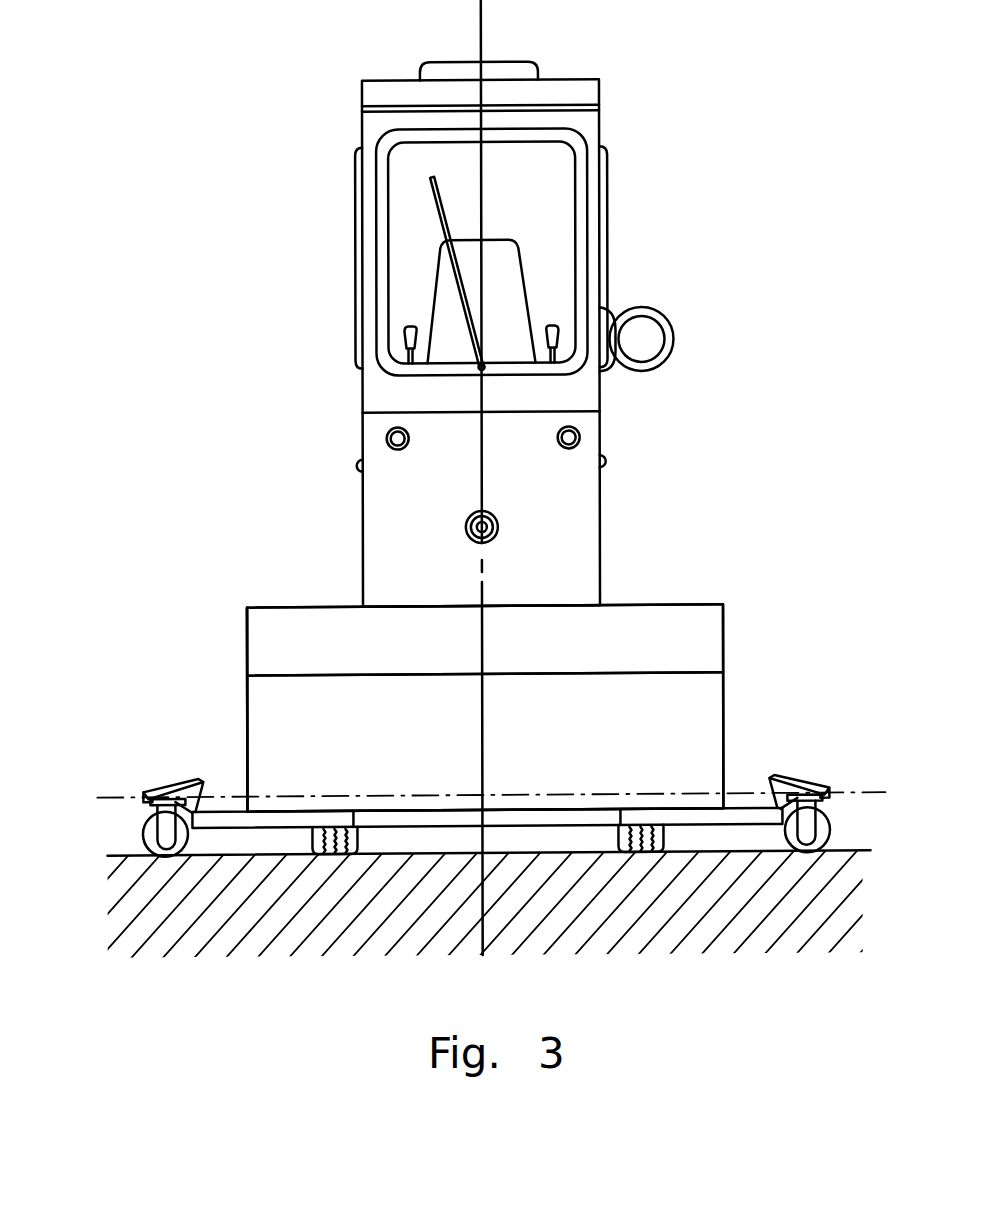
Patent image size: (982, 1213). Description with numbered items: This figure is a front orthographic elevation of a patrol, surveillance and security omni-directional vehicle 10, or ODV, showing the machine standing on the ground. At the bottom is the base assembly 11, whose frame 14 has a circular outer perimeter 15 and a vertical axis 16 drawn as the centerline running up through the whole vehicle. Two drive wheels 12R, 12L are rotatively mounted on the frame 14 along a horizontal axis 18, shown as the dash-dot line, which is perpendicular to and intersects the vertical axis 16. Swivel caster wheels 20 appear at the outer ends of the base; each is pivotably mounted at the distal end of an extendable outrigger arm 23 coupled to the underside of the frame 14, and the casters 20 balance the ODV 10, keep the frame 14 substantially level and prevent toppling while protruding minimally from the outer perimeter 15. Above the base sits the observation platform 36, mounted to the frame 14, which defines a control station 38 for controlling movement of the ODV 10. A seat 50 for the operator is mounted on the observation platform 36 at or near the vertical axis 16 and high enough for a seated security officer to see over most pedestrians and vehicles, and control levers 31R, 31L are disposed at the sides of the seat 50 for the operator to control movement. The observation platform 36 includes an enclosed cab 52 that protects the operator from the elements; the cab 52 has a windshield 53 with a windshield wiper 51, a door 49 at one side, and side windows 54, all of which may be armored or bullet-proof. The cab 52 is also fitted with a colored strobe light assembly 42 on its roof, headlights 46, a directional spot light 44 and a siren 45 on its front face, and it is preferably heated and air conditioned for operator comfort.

The omni-directional vehicle 10 is at (182, 317).
The base assembly 11 is at (723, 690).
The right drive wheel 12R is at (360, 836).
The left drive wheel 12L is at (612, 840).
The frame 14 is at (723, 709).
The outer perimeter 15 is at (247, 707).
The vertical axis 16 is at (484, 735).
The horizontal axis 18 is at (117, 796).
The swivel caster wheel 20 is at (145, 838).
The extendable outrigger arm 23 is at (228, 808).
The right control lever 31R is at (407, 332).
The left control lever 31L is at (558, 330).
The observation platform 36 is at (695, 606).
The control station 38 is at (538, 267).
The colored strobe light assembly 42 is at (497, 62).
The directional spot light 44 is at (359, 465).
The siren 45 is at (499, 527).
The headlights 46 is at (387, 438).
The door 49 is at (602, 397).
The seat 50 is at (508, 240).
The windshield wiper 51 is at (442, 219).
The enclosed cab 52 is at (601, 125).
The windshield 53 is at (389, 178).
The side windows 54 is at (606, 178).